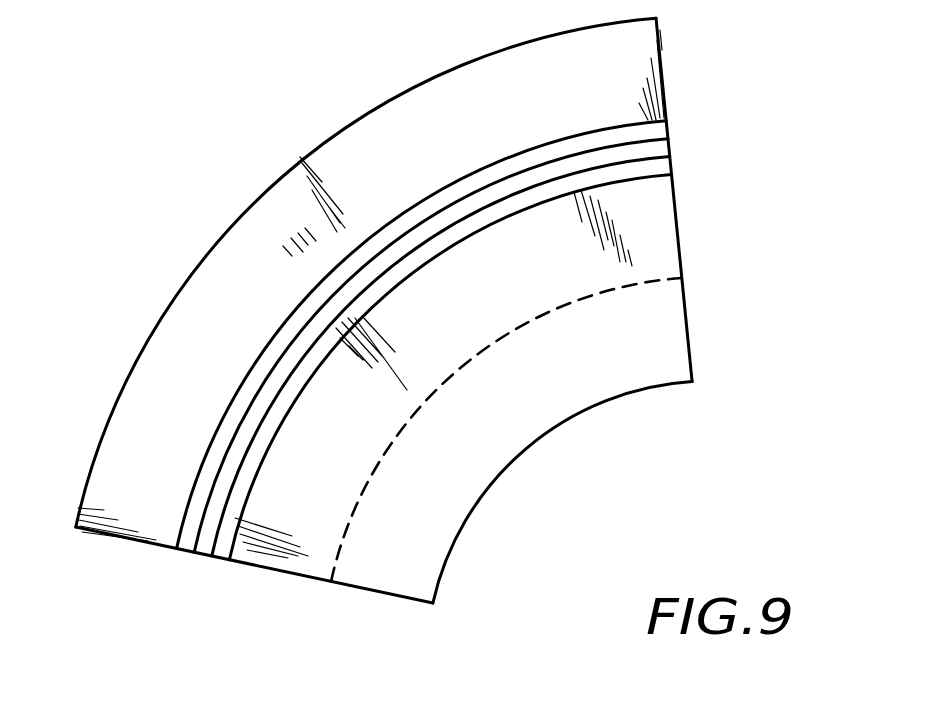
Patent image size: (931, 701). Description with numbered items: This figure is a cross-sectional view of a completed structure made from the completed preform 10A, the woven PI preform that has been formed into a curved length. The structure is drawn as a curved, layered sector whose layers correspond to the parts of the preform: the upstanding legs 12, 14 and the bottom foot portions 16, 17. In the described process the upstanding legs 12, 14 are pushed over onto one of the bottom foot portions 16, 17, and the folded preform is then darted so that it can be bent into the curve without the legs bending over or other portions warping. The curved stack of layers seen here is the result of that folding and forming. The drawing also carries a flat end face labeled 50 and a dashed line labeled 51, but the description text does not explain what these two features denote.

The completed preform 10A is at (316, 151).
The bottom foot portion 17 is at (110, 538).
The upstanding leg 12 is at (177, 555).
The upstanding leg 14 is at (222, 563).
The bottom foot portion 16 is at (307, 580).
The end face 50 is at (692, 350).
The cut line 51 is at (653, 278).